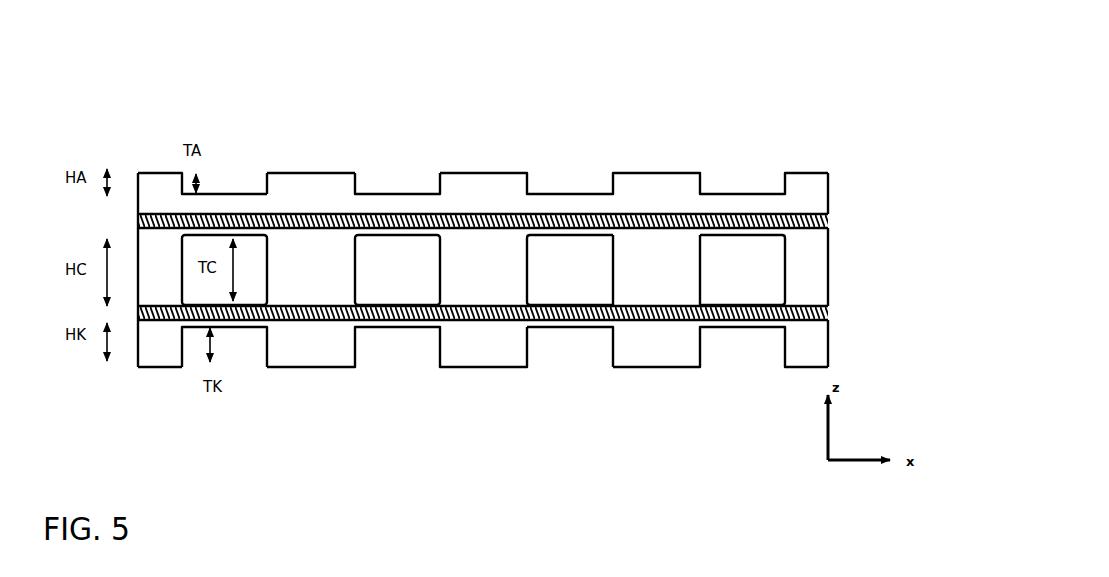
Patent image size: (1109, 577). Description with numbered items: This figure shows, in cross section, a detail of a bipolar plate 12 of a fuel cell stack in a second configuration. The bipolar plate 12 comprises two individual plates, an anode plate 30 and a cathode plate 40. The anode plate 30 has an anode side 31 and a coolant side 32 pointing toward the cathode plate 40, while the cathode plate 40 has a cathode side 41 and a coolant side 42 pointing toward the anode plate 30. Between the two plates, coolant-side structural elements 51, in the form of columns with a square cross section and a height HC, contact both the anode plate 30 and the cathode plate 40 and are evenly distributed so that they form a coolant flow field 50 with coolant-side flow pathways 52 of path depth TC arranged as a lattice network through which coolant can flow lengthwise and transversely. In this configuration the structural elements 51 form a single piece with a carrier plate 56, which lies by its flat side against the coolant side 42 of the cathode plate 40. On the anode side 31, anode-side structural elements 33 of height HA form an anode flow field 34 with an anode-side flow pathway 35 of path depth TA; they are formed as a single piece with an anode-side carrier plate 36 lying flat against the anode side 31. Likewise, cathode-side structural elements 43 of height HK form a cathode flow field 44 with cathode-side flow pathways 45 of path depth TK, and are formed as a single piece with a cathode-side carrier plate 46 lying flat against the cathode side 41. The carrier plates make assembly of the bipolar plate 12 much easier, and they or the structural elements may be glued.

The bipolar plate 12 is at (643, 89).
The anode plate 30 is at (832, 215).
The anode side 31 is at (497, 137).
The coolant side 32 is at (429, 252).
The anode-side structural elements 33 is at (339, 172).
The anode flow field 34 is at (431, 176).
The anode-side flow pathway 35 is at (259, 176).
The anode-side carrier plate 36 is at (832, 183).
The cathode plate 40 is at (834, 308).
The cathode side 41 is at (744, 355).
The coolant side 42 is at (556, 290).
The cathode-side structural elements 43 is at (182, 369).
The cathode flow field 44 is at (591, 360).
The cathode-side flow pathways 45 is at (253, 335).
The cathode-side carrier plate 46 is at (832, 359).
The coolant flow field 50 is at (780, 261).
The coolant-side structural elements 51 is at (682, 255).
The coolant-side flow pathways 52 is at (216, 247).
The carrier plate 56 is at (834, 277).